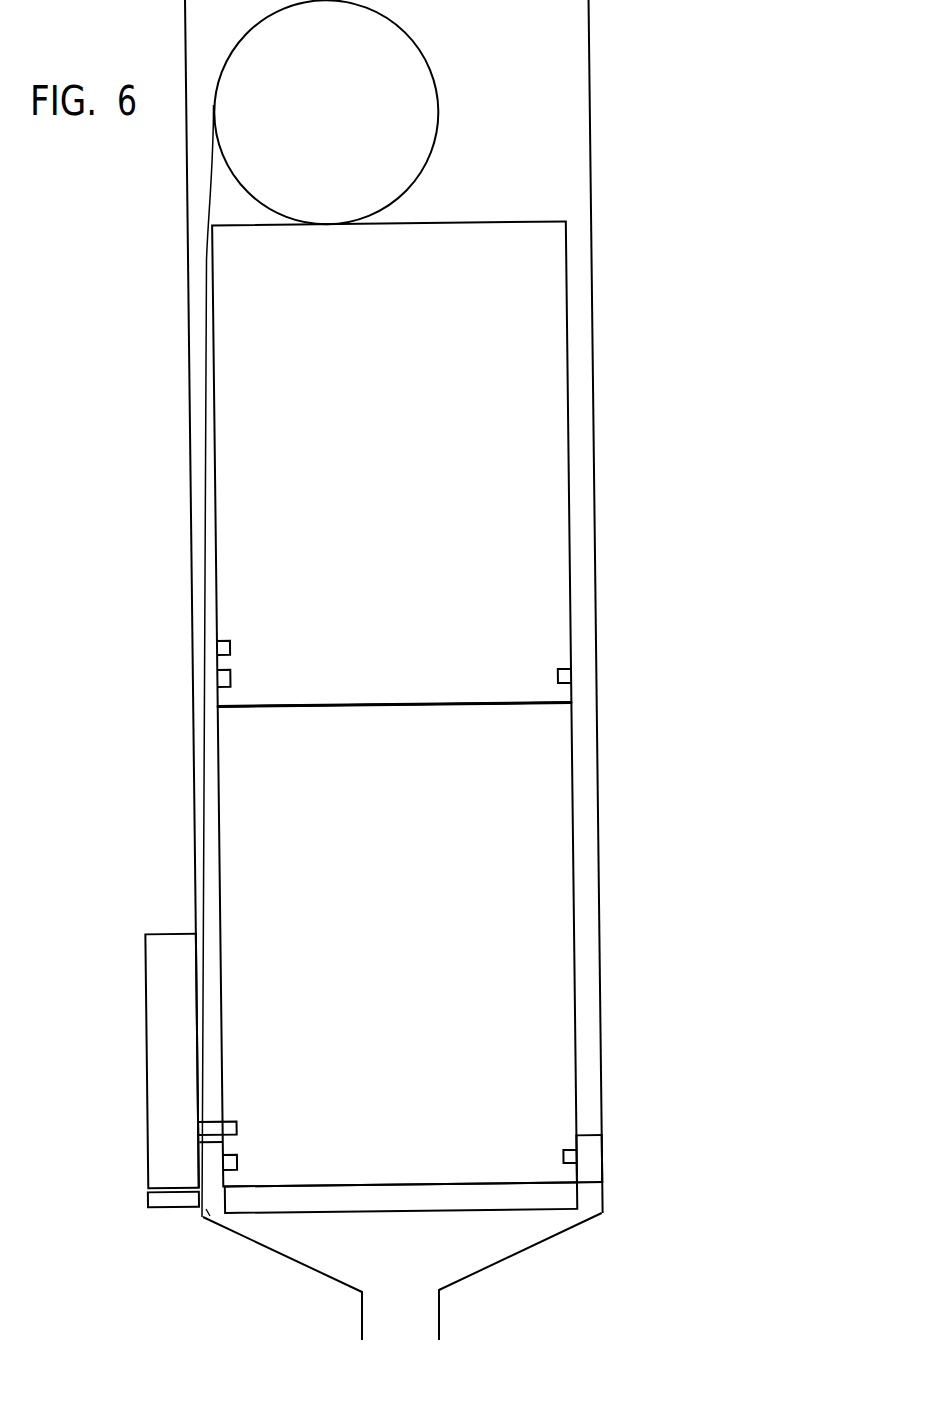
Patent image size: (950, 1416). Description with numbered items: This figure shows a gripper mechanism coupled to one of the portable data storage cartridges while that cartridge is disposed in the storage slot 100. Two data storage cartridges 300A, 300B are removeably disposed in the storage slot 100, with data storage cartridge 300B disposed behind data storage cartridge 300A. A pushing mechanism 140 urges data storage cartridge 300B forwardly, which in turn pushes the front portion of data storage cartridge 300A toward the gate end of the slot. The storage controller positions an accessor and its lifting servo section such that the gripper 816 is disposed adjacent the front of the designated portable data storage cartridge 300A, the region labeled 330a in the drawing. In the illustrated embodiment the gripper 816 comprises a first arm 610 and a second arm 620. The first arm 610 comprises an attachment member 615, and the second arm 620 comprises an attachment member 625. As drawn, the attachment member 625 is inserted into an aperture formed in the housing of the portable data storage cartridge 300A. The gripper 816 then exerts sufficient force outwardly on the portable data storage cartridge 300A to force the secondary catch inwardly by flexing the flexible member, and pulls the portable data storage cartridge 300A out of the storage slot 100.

The storage slot 100 is at (633, 679).
The pushing mechanism 140 is at (442, 98).
The data storage cartridge 300B is at (410, 464).
The data storage cartridge 300A is at (415, 944).
The bottom plate 330a is at (358, 1185).
The first arm 610 is at (577, 1195).
The attachment member 615 is at (568, 1155).
The second arm 620 is at (202, 1218).
The attachment member 625 is at (228, 1162).
The gripper 816 is at (445, 1316).